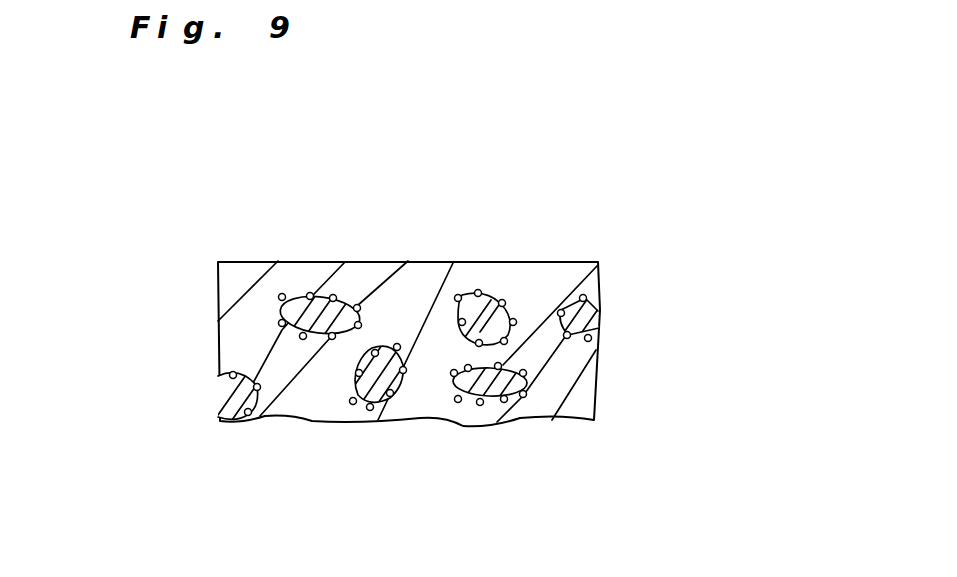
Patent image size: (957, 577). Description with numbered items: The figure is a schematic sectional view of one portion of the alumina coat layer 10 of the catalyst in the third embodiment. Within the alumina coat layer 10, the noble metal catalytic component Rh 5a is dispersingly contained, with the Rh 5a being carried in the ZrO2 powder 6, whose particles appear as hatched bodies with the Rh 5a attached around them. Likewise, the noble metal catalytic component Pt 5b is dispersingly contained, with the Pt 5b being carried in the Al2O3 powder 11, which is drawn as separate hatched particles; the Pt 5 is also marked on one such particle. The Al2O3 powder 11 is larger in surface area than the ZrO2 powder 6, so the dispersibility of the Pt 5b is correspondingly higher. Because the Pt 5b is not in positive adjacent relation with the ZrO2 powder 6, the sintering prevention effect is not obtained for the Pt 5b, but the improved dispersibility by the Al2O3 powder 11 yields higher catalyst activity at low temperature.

The alumina coat layer 10 is at (406, 262).
The ZrO2 powder 6 is at (281, 296).
The Al2O3 powder 11 is at (502, 300).
The Rh 5a is at (560, 498).
The Pt 5b is at (116, 373).
The Pt 5 is at (513, 320).